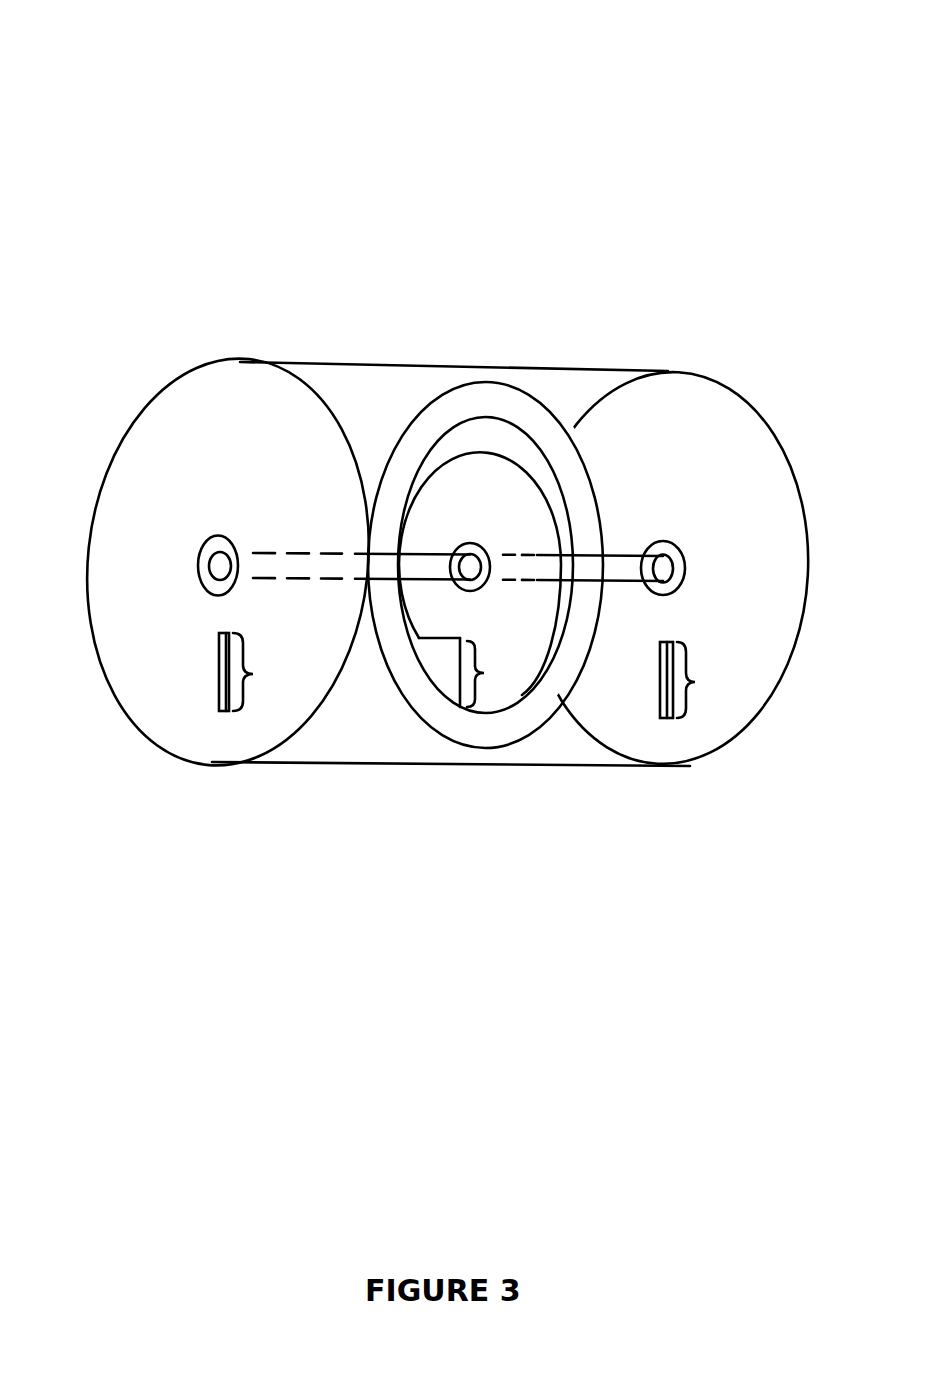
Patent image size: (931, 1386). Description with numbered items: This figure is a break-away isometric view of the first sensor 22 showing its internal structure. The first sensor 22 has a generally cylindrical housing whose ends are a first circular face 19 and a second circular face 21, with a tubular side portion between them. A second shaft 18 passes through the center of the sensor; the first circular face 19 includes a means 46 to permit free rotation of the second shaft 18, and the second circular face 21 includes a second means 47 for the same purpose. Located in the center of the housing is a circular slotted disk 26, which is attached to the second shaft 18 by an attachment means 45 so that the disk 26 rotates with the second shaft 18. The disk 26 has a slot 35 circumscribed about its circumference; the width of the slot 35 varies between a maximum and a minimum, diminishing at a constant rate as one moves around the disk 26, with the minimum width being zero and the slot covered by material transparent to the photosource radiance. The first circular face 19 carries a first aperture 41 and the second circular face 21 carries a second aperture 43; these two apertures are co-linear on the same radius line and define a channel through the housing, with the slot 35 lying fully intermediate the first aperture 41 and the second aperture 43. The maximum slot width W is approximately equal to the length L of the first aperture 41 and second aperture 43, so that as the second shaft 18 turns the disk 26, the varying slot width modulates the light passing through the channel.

The first sensor 22 is at (138, 153).
The first circular face 19 is at (147, 428).
The second circular face 21 is at (735, 406).
The slotted disk 26 is at (430, 408).
The slot 35 is at (482, 440).
The second shaft 18 is at (299, 553).
The means to permit free rotation of second shaft 46 is at (197, 563).
The attachment means 45 is at (471, 548).
The second means to permit free rotation of second shaft 47 is at (663, 544).
The first aperture 41 is at (222, 680).
The second aperture 43 is at (663, 687).